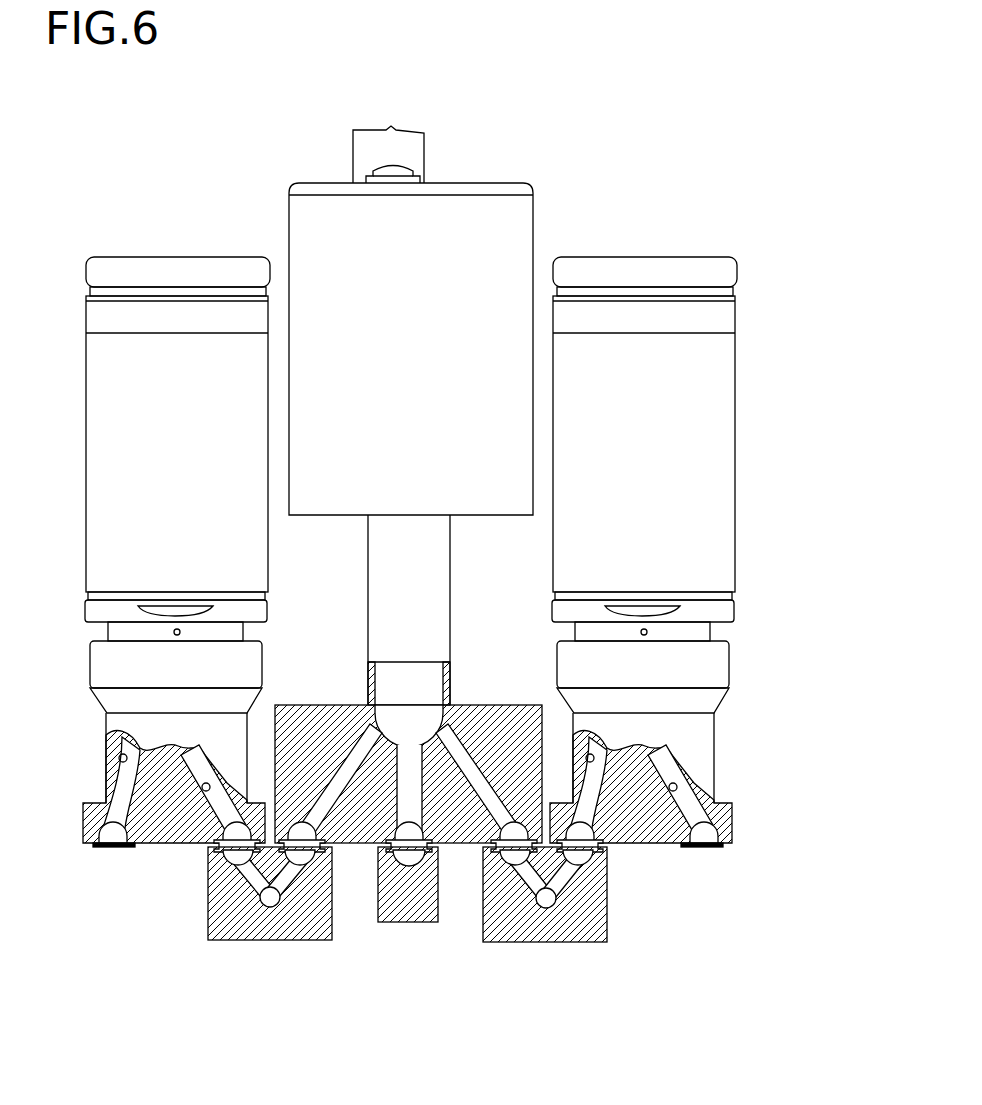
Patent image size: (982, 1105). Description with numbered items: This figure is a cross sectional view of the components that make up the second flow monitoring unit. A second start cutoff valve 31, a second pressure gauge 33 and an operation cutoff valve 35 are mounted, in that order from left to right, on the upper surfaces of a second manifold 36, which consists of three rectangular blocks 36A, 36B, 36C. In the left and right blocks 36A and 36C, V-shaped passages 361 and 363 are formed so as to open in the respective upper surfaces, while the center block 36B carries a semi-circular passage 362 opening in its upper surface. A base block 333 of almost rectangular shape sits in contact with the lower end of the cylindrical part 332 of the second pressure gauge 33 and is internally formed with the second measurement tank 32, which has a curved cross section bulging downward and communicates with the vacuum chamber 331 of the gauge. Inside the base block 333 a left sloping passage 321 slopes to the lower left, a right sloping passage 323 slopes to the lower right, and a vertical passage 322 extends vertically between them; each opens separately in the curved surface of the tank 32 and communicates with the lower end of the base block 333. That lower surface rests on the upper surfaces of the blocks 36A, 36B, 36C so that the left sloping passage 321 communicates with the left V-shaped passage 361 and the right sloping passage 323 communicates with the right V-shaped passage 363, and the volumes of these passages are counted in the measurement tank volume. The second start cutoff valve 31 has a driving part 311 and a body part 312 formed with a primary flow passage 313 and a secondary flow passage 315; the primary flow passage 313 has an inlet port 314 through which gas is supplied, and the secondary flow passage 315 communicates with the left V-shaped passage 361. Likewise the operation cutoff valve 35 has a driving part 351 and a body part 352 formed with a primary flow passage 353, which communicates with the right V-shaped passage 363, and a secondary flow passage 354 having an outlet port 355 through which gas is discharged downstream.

The second start cutoff valve 31 is at (203, 255).
The driving part 311 is at (93, 447).
The body part 312 is at (102, 673).
The primary flow passage 313 is at (118, 762).
The inlet port 314 is at (105, 845).
The secondary flow passage 315 is at (183, 832).
The second measurement tank 32 is at (430, 722).
The left sloping passage 321 is at (355, 755).
The vertical passage 322 is at (413, 788).
The right sloping passage 323 is at (468, 767).
The second pressure gauge 33 is at (468, 183).
The vacuum chamber 331 is at (507, 207).
The cylindrical part 332 is at (445, 600).
The base block 333 is at (292, 712).
The operation cutoff valve 35 is at (670, 260).
The driving part 351 is at (678, 424).
The body part 352 is at (675, 656).
The primary flow passage 353 is at (674, 774).
The secondary flow passage 354 is at (723, 787).
The outlet port 355 is at (708, 860).
The second manifold 36 is at (575, 1025).
The rectangular block 36A is at (270, 933).
The rectangular block 36B is at (410, 910).
The rectangular block 36C is at (544, 935).
The V-shaped passage 361 is at (212, 913).
The semi-circular passage 362 is at (403, 860).
The V-shaped passage 363 is at (563, 893).